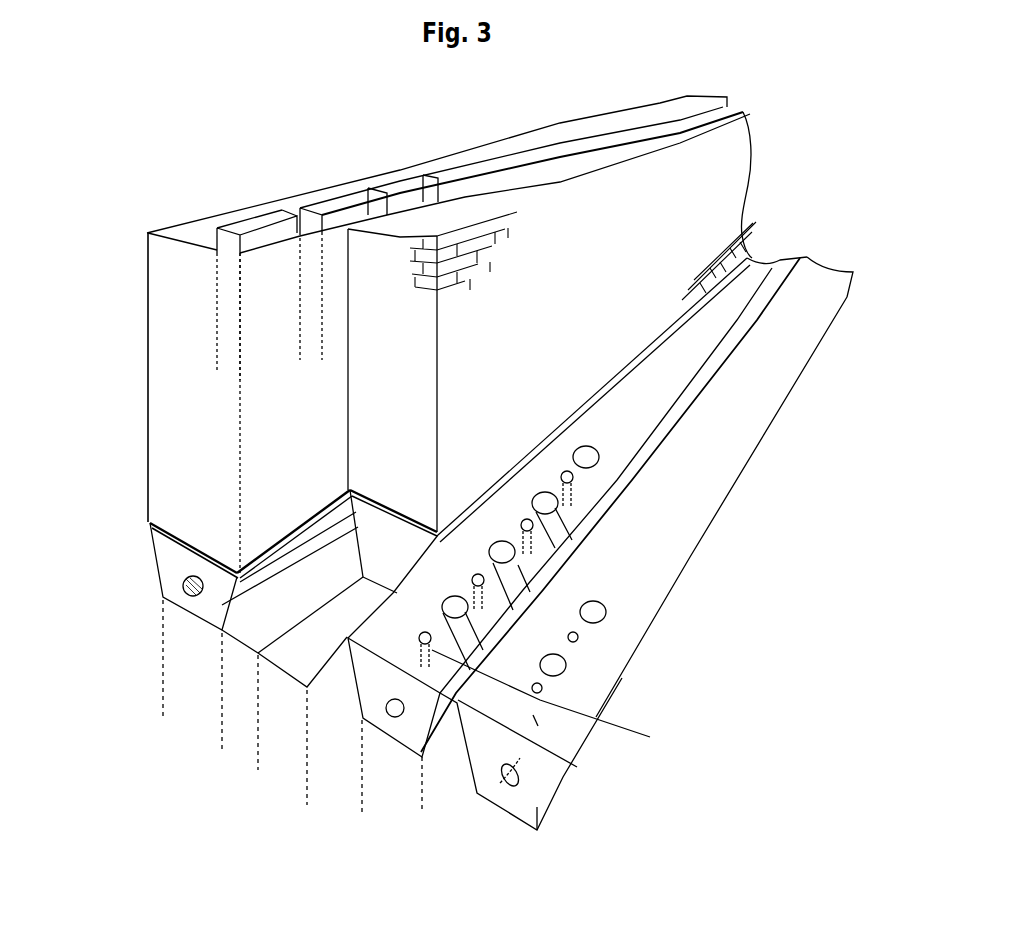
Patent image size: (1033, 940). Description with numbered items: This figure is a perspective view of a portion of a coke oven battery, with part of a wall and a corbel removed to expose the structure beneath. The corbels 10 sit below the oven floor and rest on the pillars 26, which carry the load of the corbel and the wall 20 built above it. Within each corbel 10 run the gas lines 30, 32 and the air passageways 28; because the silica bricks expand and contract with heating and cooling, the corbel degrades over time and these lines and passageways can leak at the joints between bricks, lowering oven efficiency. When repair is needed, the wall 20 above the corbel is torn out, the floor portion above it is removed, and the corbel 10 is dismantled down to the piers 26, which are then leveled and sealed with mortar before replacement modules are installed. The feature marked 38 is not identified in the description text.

The corbel 10 is at (178, 574).
The wall 20 is at (170, 412).
The pillar 26 is at (178, 652).
The air passageway 28 is at (428, 638).
The gas line 30 is at (555, 700).
The gas line 32 is at (386, 708).
The connector tab 38 is at (437, 172).